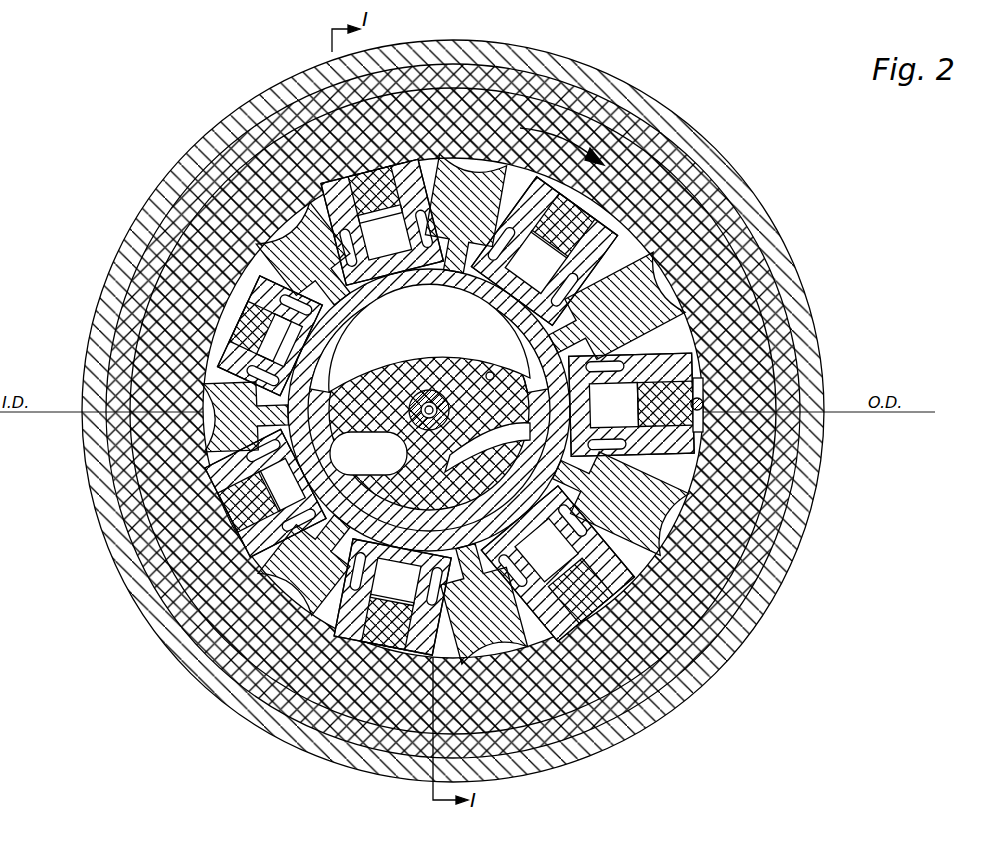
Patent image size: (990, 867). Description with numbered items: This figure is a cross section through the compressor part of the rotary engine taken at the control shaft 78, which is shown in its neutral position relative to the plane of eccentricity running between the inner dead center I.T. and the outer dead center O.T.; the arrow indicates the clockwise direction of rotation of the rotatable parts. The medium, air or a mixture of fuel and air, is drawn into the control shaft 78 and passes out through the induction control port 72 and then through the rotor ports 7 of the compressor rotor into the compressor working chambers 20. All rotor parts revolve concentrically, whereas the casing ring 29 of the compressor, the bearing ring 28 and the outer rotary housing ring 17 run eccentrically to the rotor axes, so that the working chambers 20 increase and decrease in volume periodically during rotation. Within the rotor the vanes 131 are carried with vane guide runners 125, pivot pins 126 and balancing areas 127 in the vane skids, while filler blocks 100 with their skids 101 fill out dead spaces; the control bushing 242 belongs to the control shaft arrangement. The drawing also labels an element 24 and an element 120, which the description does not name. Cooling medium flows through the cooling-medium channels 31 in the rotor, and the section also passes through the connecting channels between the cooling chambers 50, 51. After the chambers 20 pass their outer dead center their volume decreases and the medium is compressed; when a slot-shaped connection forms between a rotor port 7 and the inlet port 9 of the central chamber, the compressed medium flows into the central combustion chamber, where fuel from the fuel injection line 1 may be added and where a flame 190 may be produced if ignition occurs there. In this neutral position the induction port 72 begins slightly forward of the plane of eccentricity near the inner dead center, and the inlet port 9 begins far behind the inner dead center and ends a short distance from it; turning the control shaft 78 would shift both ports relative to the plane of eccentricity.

The fuel injection line 1 is at (432, 400).
The compressor ports 7 is at (492, 218).
The inlet port of the central chamber 9 is at (358, 455).
The outer rotary housing ring 17 is at (800, 481).
The compressor working chambers 20 is at (495, 433).
The vane 24 is at (434, 528).
The bearing ring of the compressor 28 is at (780, 506).
The casing ring of the compressor 29 is at (730, 538).
The cooling-medium channels in rotor 31 is at (606, 378).
The cooling chamber 50 is at (471, 364).
The cooling chamber 51 is at (490, 371).
The induction control port 72 is at (408, 300).
The control shaft of engine 78 is at (371, 378).
The filler blocks 100 is at (578, 332).
The skids of filler blocks 101 is at (656, 322).
The chamber 120 is at (652, 364).
The vane guide runners 125 is at (707, 380).
The pivot pins 126 is at (692, 432).
The balancing areas in vane skids 127 is at (707, 397).
The vanes 131 is at (661, 421).
The flame 190 is at (440, 414).
The control bushing 242 is at (545, 470).